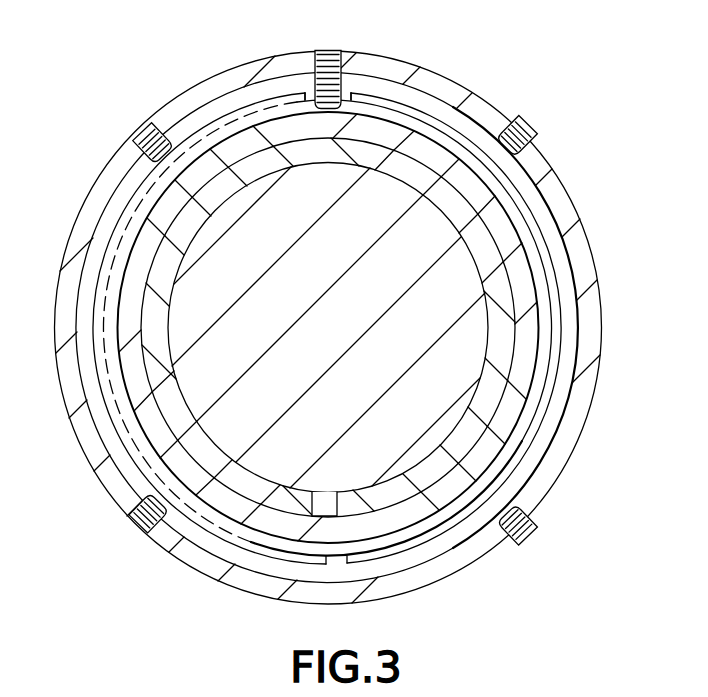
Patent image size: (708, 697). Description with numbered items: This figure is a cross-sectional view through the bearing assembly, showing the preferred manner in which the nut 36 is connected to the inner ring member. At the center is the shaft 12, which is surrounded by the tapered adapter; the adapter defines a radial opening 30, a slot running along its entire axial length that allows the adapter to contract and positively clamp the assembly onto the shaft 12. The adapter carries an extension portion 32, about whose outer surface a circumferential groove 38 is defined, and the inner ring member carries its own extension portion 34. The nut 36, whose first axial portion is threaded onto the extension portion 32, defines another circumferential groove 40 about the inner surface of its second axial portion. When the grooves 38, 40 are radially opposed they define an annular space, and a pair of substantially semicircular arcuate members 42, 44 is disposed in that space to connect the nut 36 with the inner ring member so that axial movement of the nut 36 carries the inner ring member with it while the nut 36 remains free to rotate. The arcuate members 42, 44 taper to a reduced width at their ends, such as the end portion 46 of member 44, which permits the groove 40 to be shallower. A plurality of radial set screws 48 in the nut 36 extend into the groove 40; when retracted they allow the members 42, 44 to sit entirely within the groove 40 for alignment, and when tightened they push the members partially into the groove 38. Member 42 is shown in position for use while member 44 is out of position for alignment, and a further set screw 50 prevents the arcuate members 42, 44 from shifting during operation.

The shaft 12 is at (297, 285).
The radial opening 30 is at (322, 503).
The extension portion 32 is at (390, 152).
The extension portion 34 is at (513, 250).
The nut 36 is at (600, 290).
The circumferential groove 38 is at (512, 207).
The circumferential groove 40 is at (251, 92).
The arcuate member 42 is at (112, 225).
The arcuate member 44 is at (572, 395).
The end portion 46 is at (360, 88).
The radial set screws 48 is at (150, 122).
The set screw 50 is at (331, 50).